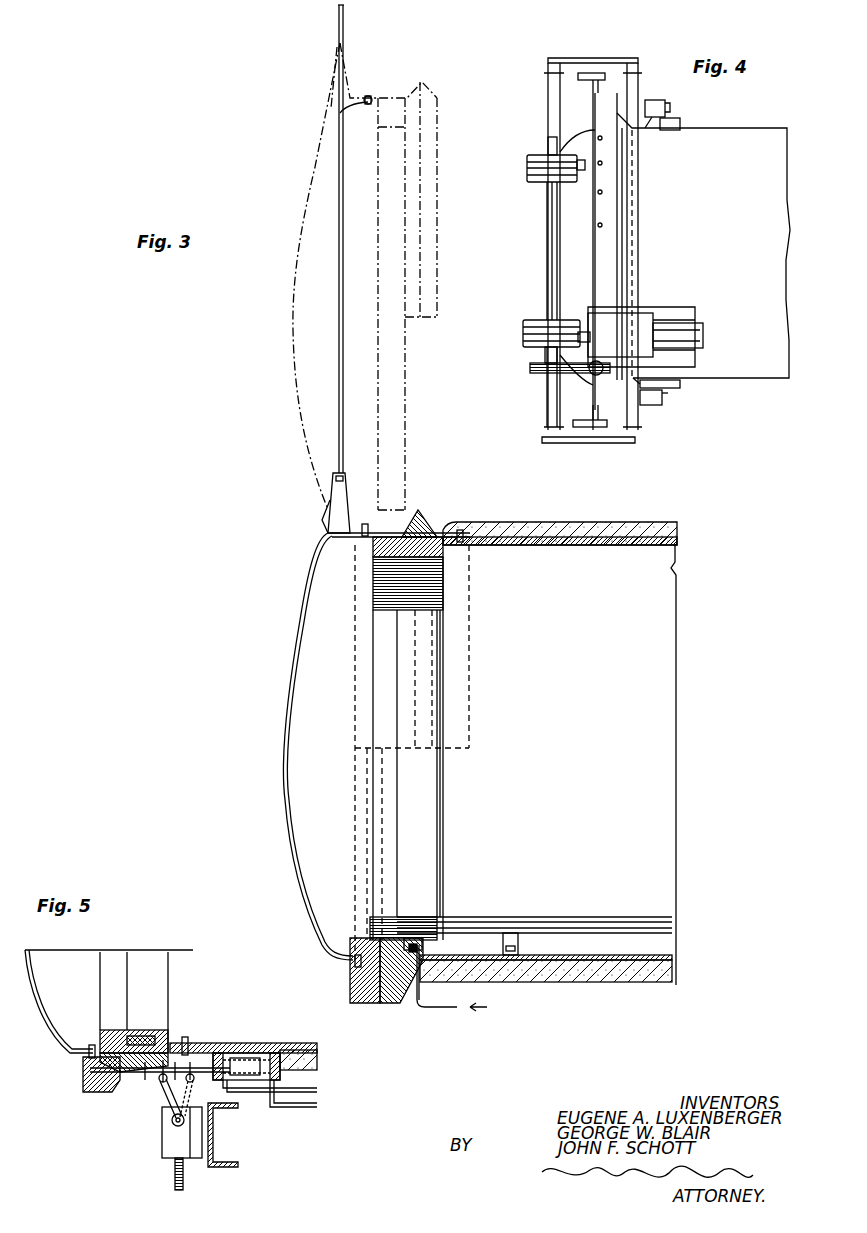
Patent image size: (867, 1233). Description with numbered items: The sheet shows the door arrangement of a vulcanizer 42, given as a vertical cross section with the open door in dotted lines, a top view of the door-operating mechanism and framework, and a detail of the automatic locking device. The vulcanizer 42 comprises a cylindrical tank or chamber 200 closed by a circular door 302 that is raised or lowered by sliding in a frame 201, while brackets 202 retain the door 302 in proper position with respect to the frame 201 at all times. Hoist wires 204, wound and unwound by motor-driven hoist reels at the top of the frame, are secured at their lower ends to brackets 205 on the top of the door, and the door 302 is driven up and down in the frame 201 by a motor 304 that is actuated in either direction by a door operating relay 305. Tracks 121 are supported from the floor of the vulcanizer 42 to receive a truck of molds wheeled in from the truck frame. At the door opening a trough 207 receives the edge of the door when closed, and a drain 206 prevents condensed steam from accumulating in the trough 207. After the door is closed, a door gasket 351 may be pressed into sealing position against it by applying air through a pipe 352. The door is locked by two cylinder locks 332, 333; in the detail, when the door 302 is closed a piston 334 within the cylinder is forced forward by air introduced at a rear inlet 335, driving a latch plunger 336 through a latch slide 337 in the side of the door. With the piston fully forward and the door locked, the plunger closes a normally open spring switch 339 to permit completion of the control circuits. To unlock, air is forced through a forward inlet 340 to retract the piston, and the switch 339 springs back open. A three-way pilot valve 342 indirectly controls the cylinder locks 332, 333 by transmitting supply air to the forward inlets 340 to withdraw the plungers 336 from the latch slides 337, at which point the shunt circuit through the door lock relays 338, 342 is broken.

In FIG. 3, the vulcanizer 42 is at (614, 522).
In FIG. 3, the tracks 121 is at (655, 925).
In FIG. 3, the cylindrical tank 200 is at (671, 662).
In FIG. 4, the frame 201 is at (566, 64).
In FIG. 4, the brackets 202 is at (596, 108).
In FIG. 3, the hoist wires 204 is at (339, 333).
In FIG. 4, the hoist wires 204 is at (523, 334).
In FIG. 3, the brackets 205 is at (328, 502).
In FIG. 4, the brackets 205 is at (581, 332).
In FIG. 3, the drain 206 is at (378, 1003).
In FIG. 3, the trough 207 is at (395, 985).
In FIG. 3, the door 302 is at (315, 168).
In FIG. 5, the door 302 is at (36, 1040).
In FIG. 4, the motor 304 is at (703, 336).
In FIG. 4, the door operating relay 305 is at (641, 320).
In FIG. 4, the cylinder lock 332 is at (681, 124).
In FIG. 5, the cylinder lock 332 is at (250, 1060).
In FIG. 4, the cylinder lock 333 is at (681, 385).
In FIG. 5, the piston 334 is at (232, 1046).
In FIG. 5, the rear inlet 335 is at (316, 1110).
In FIG. 5, the latch plunger 336 is at (140, 1085).
In FIG. 5, the latch slide 337 is at (83, 1075).
In FIG. 5, the door lock relay 338 is at (184, 1038).
In FIG. 4, the spring switch 339 is at (653, 100).
In FIG. 5, the spring switch 339 is at (162, 1147).
In FIG. 5, the forward inlet 340 is at (289, 1081).
In FIG. 4, the three-way pilot valve 342 is at (655, 406).
In FIG. 3, the door gasket 351 is at (413, 940).
In FIG. 3, the pipe 352 is at (428, 1012).